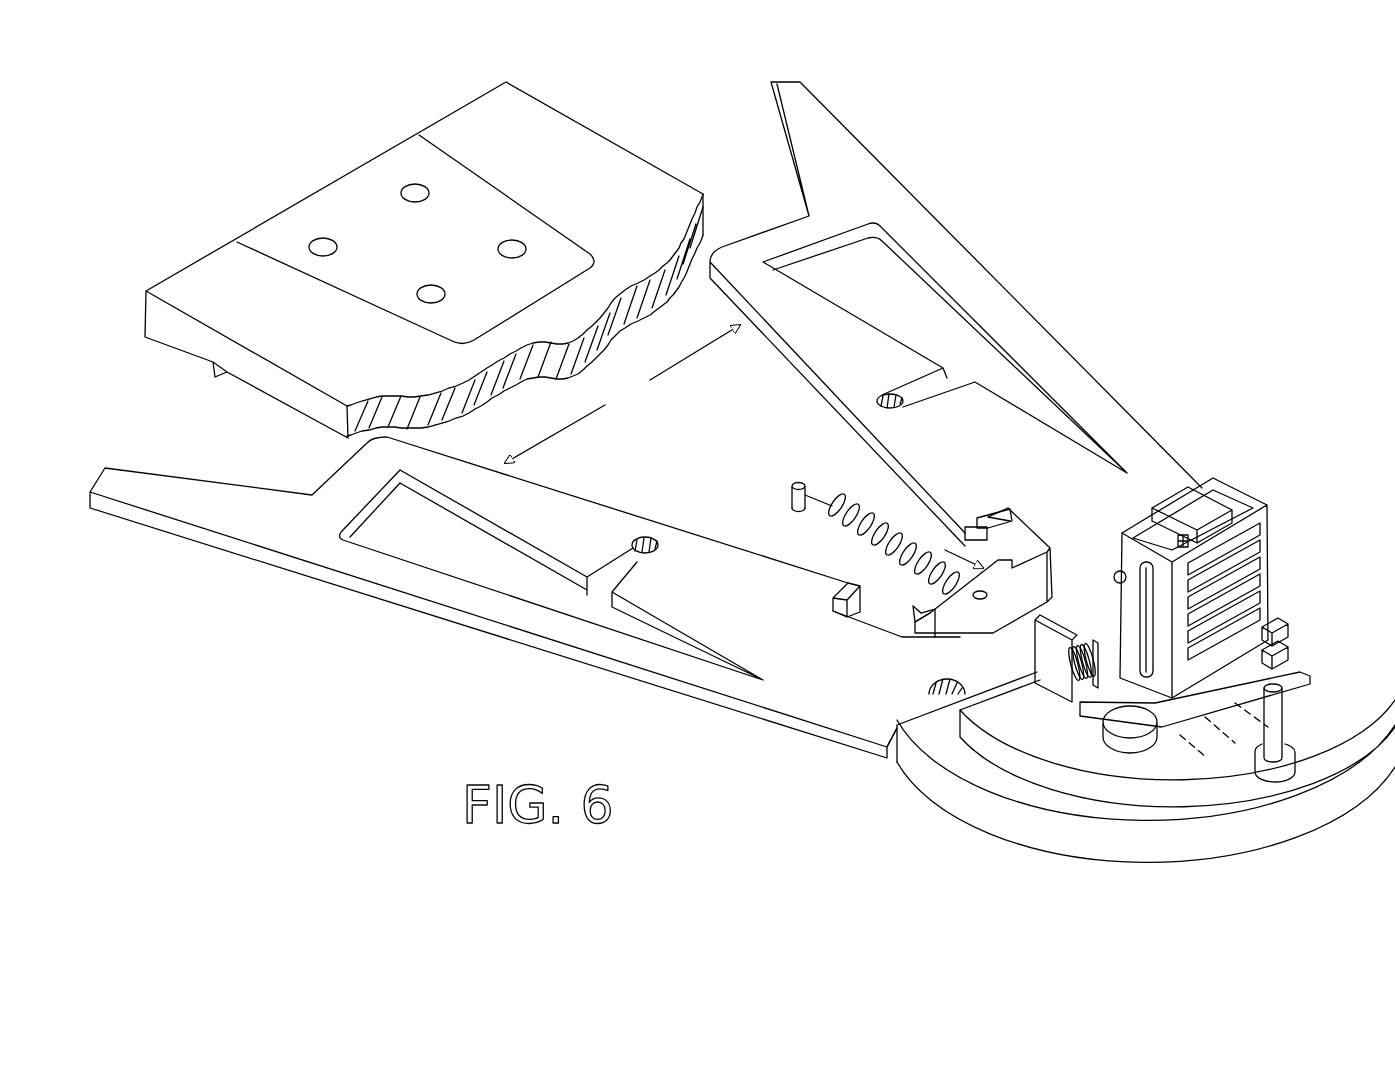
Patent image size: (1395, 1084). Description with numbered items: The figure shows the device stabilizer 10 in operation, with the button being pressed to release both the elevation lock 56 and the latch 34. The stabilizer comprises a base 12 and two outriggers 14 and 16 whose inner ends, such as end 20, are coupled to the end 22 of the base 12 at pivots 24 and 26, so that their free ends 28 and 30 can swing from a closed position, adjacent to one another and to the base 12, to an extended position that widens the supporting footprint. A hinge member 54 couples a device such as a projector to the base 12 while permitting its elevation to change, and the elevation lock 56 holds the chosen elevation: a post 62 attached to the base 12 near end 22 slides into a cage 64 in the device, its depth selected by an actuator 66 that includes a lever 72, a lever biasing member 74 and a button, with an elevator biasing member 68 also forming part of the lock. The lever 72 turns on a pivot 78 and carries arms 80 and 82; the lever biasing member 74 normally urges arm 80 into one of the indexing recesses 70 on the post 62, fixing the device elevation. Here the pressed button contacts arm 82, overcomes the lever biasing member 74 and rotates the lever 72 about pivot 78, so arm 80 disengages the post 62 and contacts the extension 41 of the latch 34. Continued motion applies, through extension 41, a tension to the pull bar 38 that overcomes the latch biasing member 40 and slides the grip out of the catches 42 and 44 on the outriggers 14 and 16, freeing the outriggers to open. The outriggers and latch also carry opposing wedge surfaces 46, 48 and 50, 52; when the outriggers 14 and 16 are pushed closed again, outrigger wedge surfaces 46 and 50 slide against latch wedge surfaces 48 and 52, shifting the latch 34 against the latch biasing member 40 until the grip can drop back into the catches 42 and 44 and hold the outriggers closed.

The device stabilizer 10 is at (485, 650).
The base 12 is at (610, 166).
The outrigger 14 is at (956, 300).
The outrigger 16 is at (525, 610).
The end of outrigger 20 is at (877, 720).
The end of base 22 is at (1337, 793).
The pivot 24 is at (1118, 572).
The pivot 26 is at (942, 684).
The end of outrigger 28 is at (790, 84).
The end of outrigger 30 is at (112, 475).
The latch 34 is at (1040, 522).
The pull bar 38 is at (1151, 703).
The latch biasing member 40 is at (832, 505).
The extension 41 is at (1277, 705).
The catch 42 is at (848, 588).
The catch 44 is at (977, 520).
The outrigger wedge surface 46 is at (862, 590).
The latch wedge surface 48 is at (915, 610).
The outrigger wedge surface 50 is at (962, 535).
The latch wedge surface 52 is at (1012, 525).
The hinge member 54 is at (349, 193).
The elevation lock 56 is at (1193, 564).
The post 62 is at (1222, 500).
The cage 64 is at (1143, 527).
The actuator 66 is at (1023, 648).
The elevator biasing member 68 is at (1125, 552).
The indexing recesses 70 is at (1245, 592).
The lever 72 is at (1177, 721).
The lever biasing member 74 is at (1078, 642).
The pivot 78 is at (1080, 753).
The arm 80 is at (1300, 672).
The arm 82 is at (1052, 662).